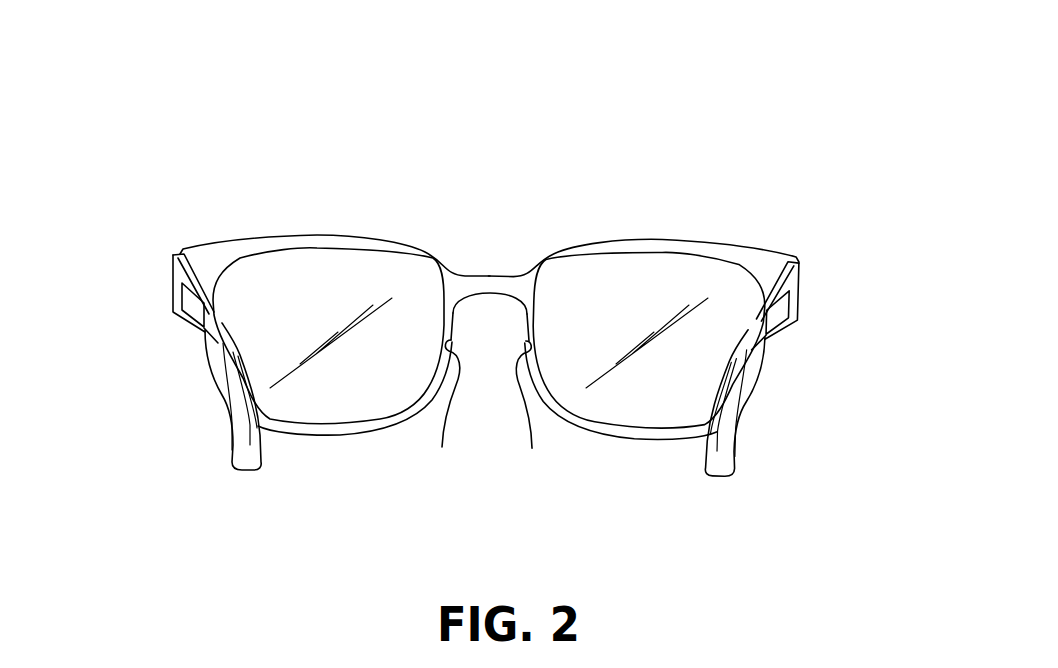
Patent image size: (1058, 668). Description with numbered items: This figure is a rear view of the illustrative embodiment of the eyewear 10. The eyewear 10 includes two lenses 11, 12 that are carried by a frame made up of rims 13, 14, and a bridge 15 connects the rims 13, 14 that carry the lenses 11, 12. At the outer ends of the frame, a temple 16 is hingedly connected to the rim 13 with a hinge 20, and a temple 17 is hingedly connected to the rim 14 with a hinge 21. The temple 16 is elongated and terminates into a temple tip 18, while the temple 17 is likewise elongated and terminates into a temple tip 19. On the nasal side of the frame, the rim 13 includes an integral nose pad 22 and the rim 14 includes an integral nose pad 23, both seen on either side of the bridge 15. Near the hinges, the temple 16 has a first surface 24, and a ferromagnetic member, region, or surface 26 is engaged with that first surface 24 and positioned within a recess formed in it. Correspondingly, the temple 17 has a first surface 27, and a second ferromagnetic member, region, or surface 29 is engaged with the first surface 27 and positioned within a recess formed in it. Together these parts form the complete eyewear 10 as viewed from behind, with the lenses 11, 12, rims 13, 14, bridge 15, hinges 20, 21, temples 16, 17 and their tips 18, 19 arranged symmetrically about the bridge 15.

The eyewear 10 is at (504, 312).
The lens 11 is at (267, 282).
The lens 12 is at (693, 280).
The rim 13 is at (313, 243).
The rim 14 is at (650, 250).
The bridge 15 is at (490, 287).
The temple 16 is at (175, 262).
The temple 17 is at (803, 278).
The temple tip 18 is at (237, 448).
The temple tip 19 is at (727, 463).
The hinge 20 is at (176, 257).
The hinge 21 is at (800, 265).
The nose pad 22 is at (359, 410).
The nose pad 23 is at (616, 411).
The first surface 24 is at (214, 331).
The ferromagnetic member, region, or surface 26 is at (192, 302).
The first surface 27 is at (758, 340).
The ferromagnetic member, region, or surface 29 is at (800, 316).